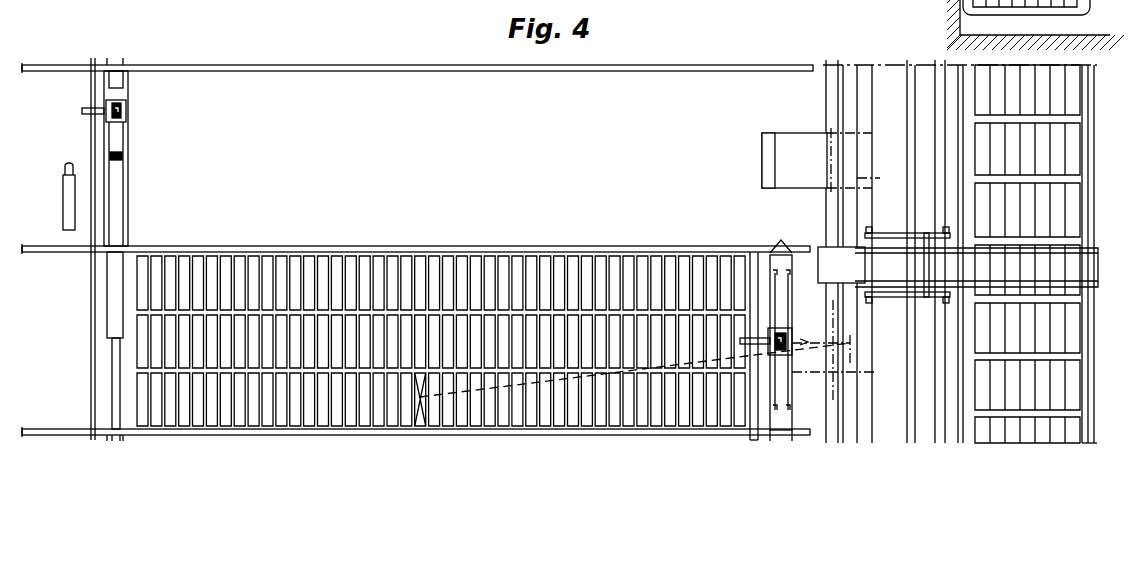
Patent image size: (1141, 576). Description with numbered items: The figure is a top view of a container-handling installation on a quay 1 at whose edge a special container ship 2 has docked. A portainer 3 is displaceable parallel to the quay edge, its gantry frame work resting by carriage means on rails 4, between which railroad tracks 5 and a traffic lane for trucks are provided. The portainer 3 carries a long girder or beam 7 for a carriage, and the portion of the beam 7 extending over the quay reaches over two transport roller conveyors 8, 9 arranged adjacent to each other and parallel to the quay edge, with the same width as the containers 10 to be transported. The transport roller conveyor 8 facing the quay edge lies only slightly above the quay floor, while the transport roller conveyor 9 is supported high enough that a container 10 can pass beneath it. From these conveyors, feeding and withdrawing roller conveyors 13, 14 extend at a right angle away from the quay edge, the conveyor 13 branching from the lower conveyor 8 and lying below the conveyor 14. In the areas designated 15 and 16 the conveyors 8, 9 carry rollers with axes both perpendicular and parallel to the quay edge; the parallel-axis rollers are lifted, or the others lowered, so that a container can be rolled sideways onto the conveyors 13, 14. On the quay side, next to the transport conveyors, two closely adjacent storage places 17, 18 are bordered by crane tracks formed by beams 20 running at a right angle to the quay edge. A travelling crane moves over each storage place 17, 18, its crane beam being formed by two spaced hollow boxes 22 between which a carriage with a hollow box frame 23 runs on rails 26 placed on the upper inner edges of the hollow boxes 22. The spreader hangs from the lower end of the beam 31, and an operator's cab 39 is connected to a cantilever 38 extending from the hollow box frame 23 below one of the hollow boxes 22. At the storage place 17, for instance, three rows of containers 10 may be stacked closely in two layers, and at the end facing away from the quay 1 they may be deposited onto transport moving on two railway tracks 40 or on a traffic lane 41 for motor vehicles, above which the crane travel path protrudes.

The quay 1 is at (899, 169).
The container ship 2 is at (1085, 322).
The portainer 3 is at (890, 224).
The rails 4 is at (870, 115).
The railroad tracks 5 is at (900, 143).
The girder or beam 7 is at (1098, 254).
The transport roller conveyor 8 is at (858, 86).
The transport roller conveyor 9 is at (826, 92).
The containers 10 is at (118, 150).
The feeding and withdrawing roller conveyor 13 is at (767, 322).
The feeding and withdrawing roller conveyor 14 is at (787, 145).
The transfer area 15 is at (863, 186).
The transfer area 16 is at (828, 160).
The storage place 17 is at (753, 440).
The storage place 18 is at (677, 197).
The beams 20 is at (298, 72).
The hollow boxes 22 is at (784, 327).
The hollow box frame 23 is at (126, 118).
The rails 26 is at (784, 303).
The beam 31 is at (123, 110).
The cantilever 38 is at (753, 348).
The operator's cab 39 is at (746, 338).
The railway tracks 40 is at (106, 376).
The traffic lane 41 is at (70, 183).